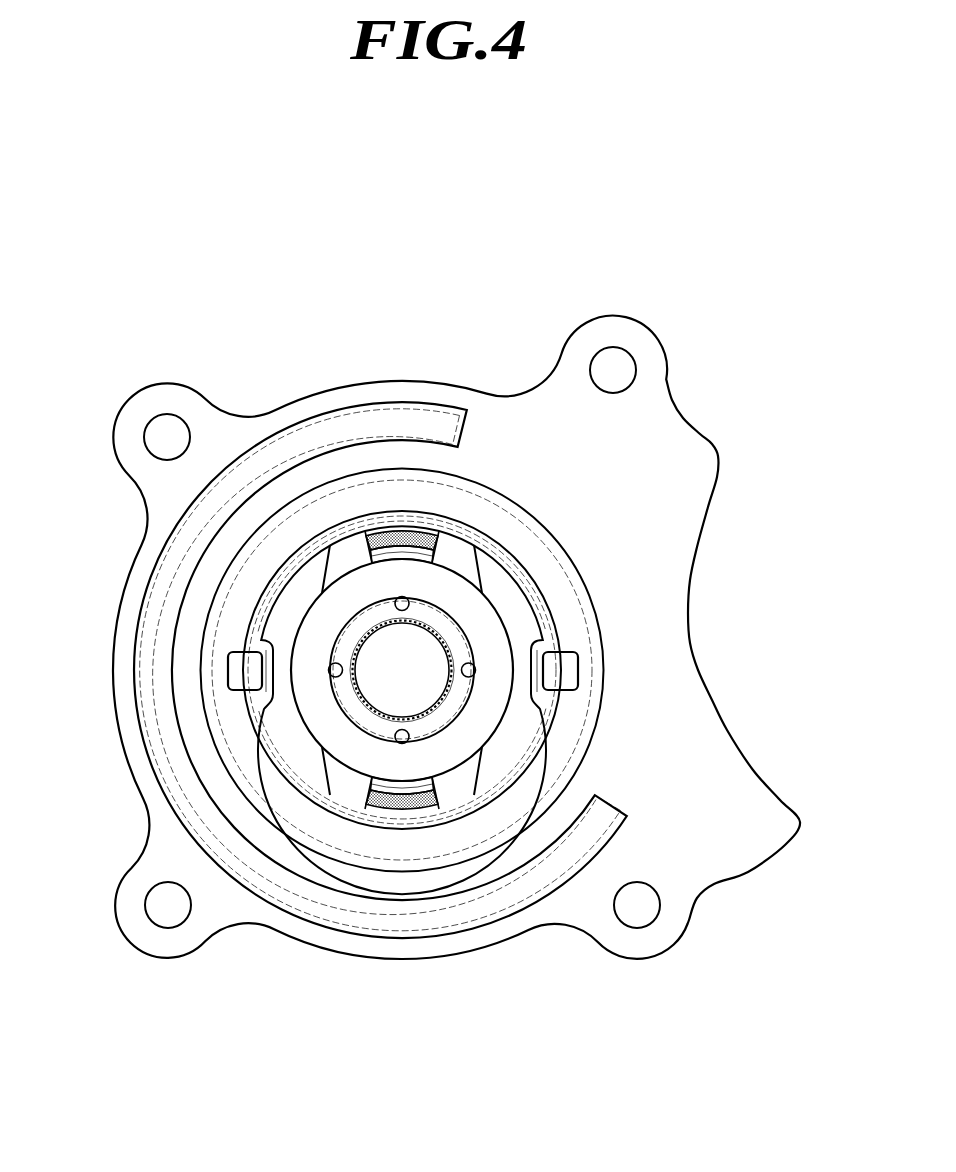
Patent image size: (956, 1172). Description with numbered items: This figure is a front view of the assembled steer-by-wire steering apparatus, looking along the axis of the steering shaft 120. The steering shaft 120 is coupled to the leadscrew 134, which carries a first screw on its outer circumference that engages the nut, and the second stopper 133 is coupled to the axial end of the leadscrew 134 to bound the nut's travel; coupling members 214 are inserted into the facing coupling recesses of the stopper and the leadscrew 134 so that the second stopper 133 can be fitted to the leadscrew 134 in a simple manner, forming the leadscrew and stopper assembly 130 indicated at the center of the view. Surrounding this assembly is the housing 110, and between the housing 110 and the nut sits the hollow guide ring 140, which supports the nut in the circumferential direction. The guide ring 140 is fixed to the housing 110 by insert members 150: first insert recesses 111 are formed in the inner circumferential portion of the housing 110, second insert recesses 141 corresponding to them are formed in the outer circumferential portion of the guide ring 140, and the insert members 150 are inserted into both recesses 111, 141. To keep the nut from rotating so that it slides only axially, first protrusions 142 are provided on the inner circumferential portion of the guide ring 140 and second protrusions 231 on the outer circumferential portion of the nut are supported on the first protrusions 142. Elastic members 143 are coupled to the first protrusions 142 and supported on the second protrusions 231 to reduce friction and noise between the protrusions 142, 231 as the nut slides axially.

The housing 110 is at (142, 558).
The first insert recess 111 is at (240, 652).
The steering shaft 120 is at (390, 647).
The rotor 130 is at (502, 582).
The second stopper 133 is at (483, 720).
The leadscrew 134 is at (443, 627).
The guide ring 140 is at (297, 790).
The second insert recess 141 is at (260, 678).
The first protrusion 142 is at (383, 812).
The elastic member 143 is at (402, 797).
The insert member 150 is at (243, 670).
The coupling member 214 is at (547, 663).
The second protrusion 231 is at (457, 790).